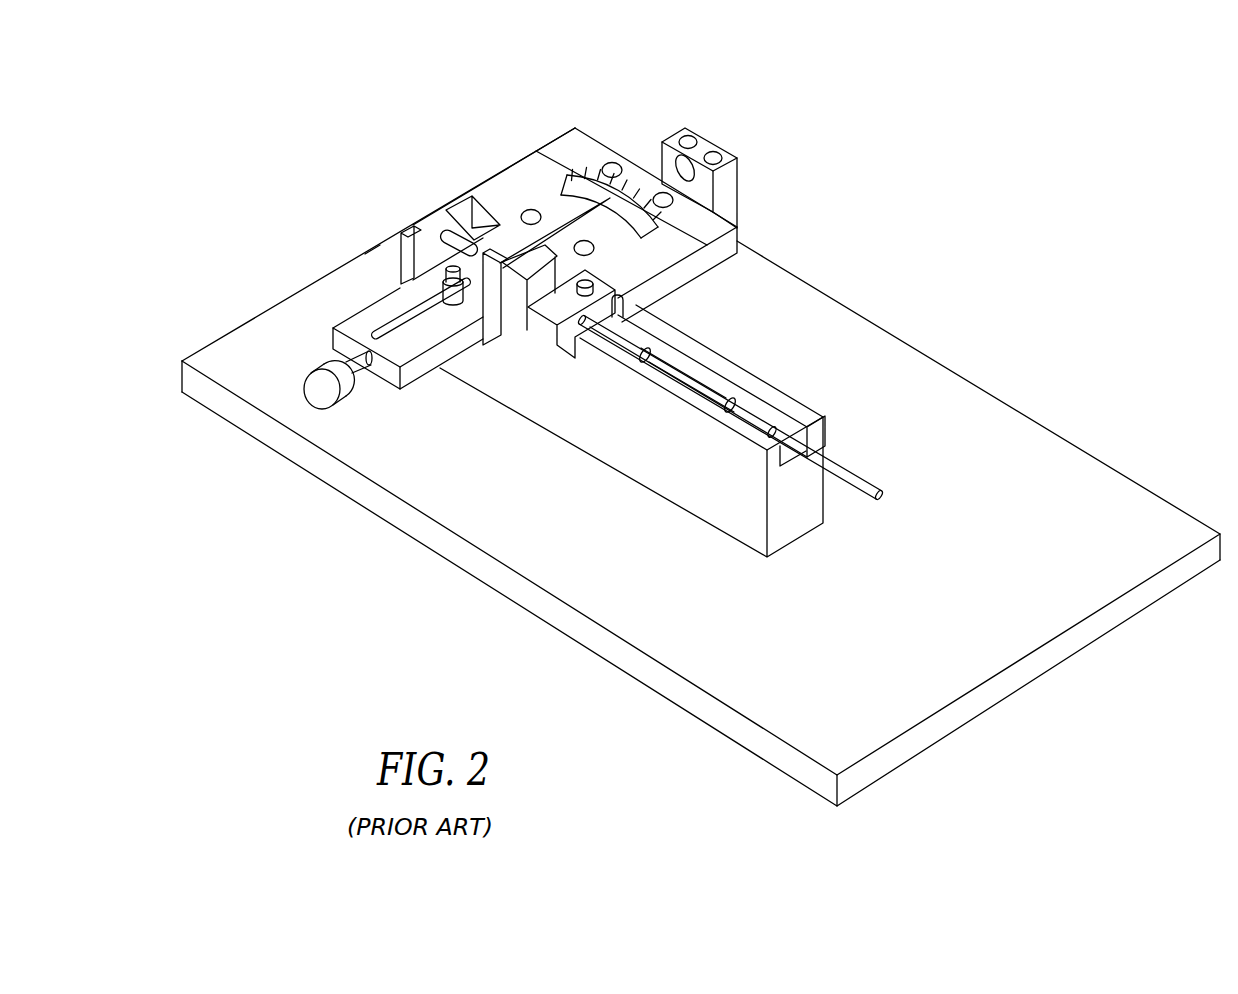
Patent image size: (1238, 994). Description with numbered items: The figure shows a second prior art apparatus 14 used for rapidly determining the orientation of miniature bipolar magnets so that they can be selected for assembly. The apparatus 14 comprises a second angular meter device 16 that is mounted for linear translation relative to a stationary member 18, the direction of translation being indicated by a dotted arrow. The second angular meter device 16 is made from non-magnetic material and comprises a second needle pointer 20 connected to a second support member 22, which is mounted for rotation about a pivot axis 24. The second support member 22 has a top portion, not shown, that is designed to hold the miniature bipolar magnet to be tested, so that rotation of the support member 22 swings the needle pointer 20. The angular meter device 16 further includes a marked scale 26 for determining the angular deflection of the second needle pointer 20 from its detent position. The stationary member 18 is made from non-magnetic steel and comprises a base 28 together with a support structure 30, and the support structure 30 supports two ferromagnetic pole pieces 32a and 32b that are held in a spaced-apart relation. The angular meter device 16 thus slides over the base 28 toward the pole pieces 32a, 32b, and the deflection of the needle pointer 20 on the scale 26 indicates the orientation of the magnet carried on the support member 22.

The second prior art apparatus 14 is at (783, 196).
The second angular meter device 16 is at (591, 158).
The stationary member 18 is at (887, 313).
The second needle pointer 20 is at (523, 247).
The second support member 22 is at (448, 297).
The pivot axis 24 is at (445, 272).
The marked scale 26 is at (568, 183).
The base 28 is at (1077, 463).
The support structure 30 is at (632, 417).
The ferromagnetic pole piece 32a is at (445, 240).
The ferromagnetic pole piece 32b is at (496, 268).